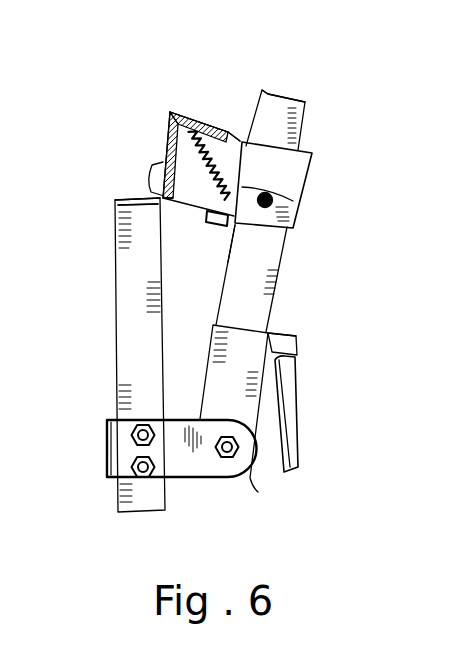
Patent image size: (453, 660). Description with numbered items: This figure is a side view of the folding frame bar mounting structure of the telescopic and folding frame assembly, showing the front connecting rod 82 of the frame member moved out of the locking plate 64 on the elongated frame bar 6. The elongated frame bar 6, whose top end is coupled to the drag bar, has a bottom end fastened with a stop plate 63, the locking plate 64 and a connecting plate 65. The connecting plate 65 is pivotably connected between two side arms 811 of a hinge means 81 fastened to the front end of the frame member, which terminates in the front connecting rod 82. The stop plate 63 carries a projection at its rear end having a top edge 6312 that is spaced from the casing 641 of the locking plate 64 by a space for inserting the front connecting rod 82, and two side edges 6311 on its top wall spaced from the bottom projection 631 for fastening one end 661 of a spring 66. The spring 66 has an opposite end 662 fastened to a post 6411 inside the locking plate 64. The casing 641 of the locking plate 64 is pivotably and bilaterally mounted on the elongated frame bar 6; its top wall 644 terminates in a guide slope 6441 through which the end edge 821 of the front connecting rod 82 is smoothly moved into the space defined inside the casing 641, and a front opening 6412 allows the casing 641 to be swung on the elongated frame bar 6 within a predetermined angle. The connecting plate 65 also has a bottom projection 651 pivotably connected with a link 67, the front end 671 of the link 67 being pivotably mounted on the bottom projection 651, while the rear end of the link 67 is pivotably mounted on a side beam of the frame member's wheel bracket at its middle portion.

The elongated frame bar 6 is at (310, 133).
The stop plate 63 is at (289, 154).
The bottom projection 631 is at (262, 248).
The side edges 6311 is at (222, 228).
The top edge 6312 is at (210, 226).
The locking plate 64 is at (182, 117).
The casing 641 is at (167, 148).
The post 6411 is at (170, 130).
The front opening 6412 is at (259, 117).
The top wall 644 is at (160, 158).
The guide slope 6441 is at (160, 184).
The connecting plate 65 is at (250, 477).
The bottom projection 651 is at (293, 378).
The spring 66 is at (231, 132).
The end of spring 661 is at (293, 197).
The opposite end of spring 662 is at (198, 123).
The link 67 is at (298, 456).
The front end of link 671 is at (297, 350).
The hinge means 81 is at (187, 482).
The side arms 811 is at (215, 480).
The front connecting rod 82 is at (115, 333).
The end edge 821 is at (113, 203).